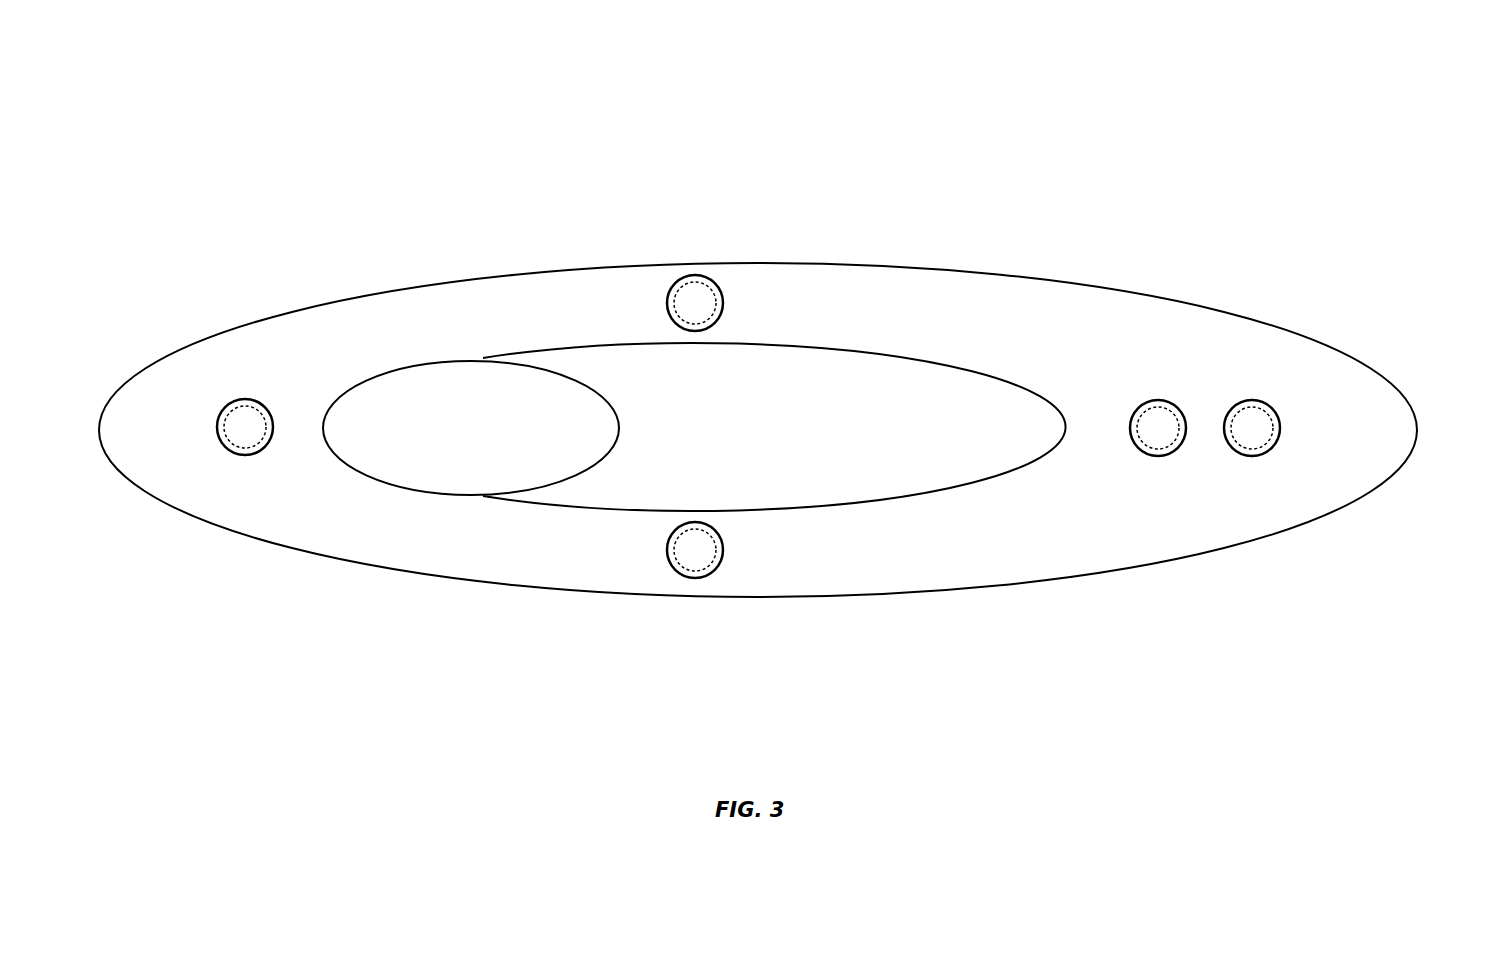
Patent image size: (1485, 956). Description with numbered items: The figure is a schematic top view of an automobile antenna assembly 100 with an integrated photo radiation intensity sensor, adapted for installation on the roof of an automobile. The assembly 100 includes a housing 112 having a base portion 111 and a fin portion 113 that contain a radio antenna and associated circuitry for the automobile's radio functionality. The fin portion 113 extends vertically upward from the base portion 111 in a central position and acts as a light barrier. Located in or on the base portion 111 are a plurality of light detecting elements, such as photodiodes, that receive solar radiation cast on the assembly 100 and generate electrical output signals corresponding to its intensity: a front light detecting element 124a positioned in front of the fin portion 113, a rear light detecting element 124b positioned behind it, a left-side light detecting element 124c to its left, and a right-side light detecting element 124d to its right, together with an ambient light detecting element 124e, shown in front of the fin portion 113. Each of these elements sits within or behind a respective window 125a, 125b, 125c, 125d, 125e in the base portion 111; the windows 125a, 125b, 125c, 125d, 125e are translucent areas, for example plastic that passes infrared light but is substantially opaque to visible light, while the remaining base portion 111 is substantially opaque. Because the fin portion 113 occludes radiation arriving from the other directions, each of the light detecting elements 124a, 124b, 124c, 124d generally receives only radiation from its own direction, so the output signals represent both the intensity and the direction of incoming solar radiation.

The automobile antenna assembly 100 is at (438, 156).
The base portion 111 is at (1382, 413).
The housing 112 is at (1053, 275).
The fin portion 113 is at (820, 395).
The front light detecting element 124a is at (1162, 428).
The rear light detecting element 124b is at (250, 425).
The left-side light detecting element 124c is at (700, 303).
The right-side light detecting element 124d is at (700, 552).
The ambient light detecting element 124e is at (1255, 428).
The window 125a is at (1145, 453).
The window 125b is at (235, 402).
The window 125c is at (683, 278).
The window 125d is at (683, 577).
The window 125e is at (1240, 403).